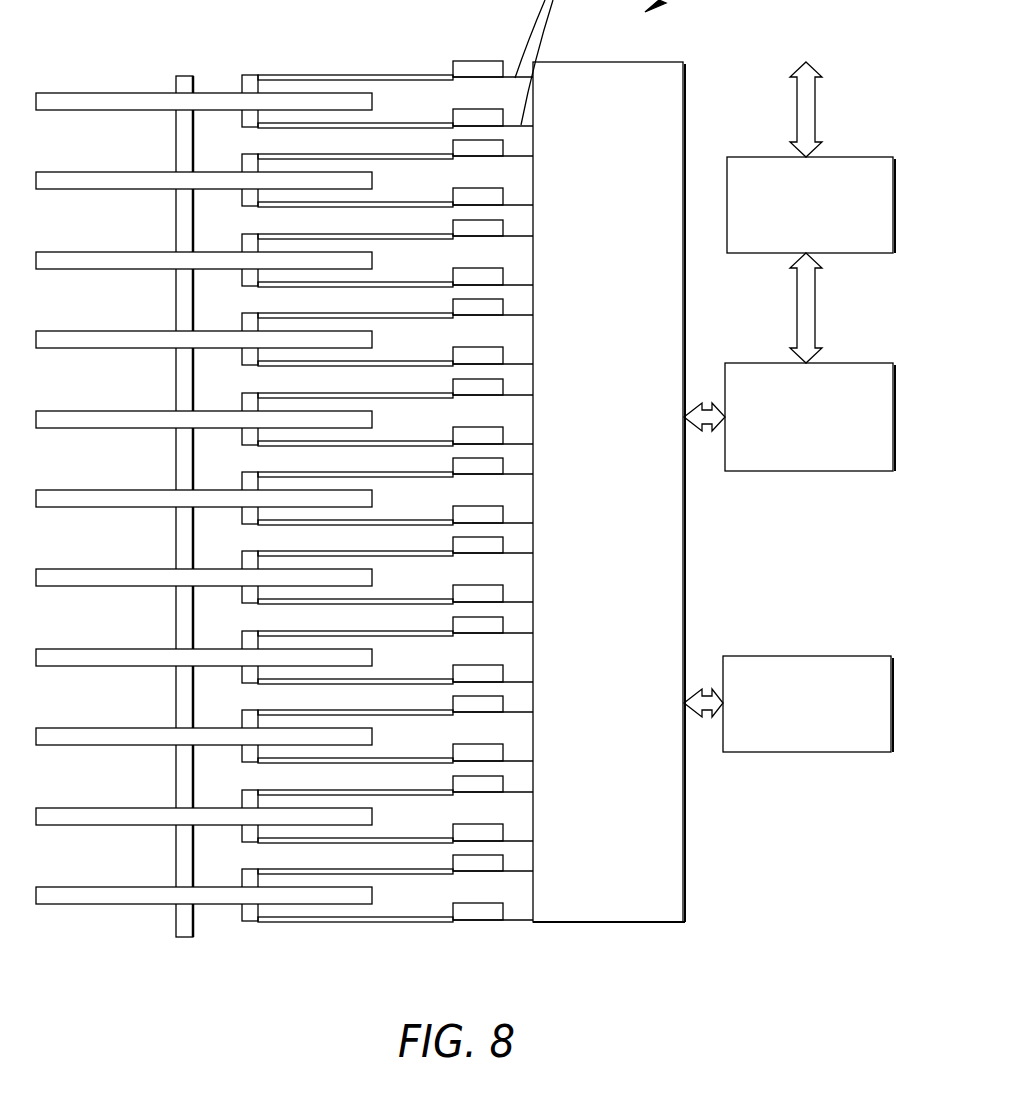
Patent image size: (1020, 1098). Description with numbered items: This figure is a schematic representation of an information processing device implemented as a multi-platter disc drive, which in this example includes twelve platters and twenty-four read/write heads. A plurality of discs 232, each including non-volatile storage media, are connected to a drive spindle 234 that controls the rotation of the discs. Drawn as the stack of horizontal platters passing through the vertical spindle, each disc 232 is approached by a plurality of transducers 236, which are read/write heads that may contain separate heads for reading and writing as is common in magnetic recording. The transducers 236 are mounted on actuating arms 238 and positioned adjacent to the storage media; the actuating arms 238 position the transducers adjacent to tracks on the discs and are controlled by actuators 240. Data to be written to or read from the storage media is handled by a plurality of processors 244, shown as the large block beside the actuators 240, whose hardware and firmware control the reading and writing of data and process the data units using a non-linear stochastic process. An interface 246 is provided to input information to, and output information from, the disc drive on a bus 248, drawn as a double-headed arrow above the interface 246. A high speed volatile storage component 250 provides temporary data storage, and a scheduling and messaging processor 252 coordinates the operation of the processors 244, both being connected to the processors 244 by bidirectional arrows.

The discs 232 is at (112, 261).
The drive spindle 234 is at (176, 927).
The transducers 236 is at (245, 118).
The actuating arms 238 is at (392, 124).
The actuators 240 is at (492, 115).
The processors 244 is at (685, 96).
The interface 246 is at (853, 255).
The bus 248 is at (815, 110).
The high speed volatile storage component 250 is at (803, 755).
The scheduling and messaging processor 252 is at (805, 473).